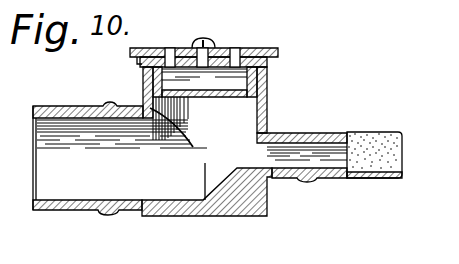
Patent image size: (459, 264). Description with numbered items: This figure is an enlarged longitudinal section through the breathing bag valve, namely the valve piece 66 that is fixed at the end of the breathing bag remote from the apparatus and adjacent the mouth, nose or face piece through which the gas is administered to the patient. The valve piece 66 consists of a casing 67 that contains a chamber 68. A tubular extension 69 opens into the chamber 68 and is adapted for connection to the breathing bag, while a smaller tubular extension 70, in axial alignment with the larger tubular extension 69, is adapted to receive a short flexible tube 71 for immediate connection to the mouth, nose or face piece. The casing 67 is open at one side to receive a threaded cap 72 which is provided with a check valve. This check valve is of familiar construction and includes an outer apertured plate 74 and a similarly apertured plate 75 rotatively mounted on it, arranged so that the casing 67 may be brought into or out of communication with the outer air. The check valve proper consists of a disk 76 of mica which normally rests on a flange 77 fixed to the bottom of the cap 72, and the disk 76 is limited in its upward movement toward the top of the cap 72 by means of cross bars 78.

The valve piece 66 is at (228, 224).
The casing 67 is at (235, 183).
The chamber 68 is at (192, 127).
The tubular extension 69 is at (121, 159).
The smaller tubular extension 70 is at (312, 158).
The short flexible tube 71 is at (365, 133).
The threaded cap 72 is at (273, 67).
The outer apertured plate 74 is at (275, 58).
The apertured plate 75 is at (243, 50).
The disk 76 is at (195, 96).
The flange 77 is at (232, 100).
The cross bars 78 is at (187, 72).